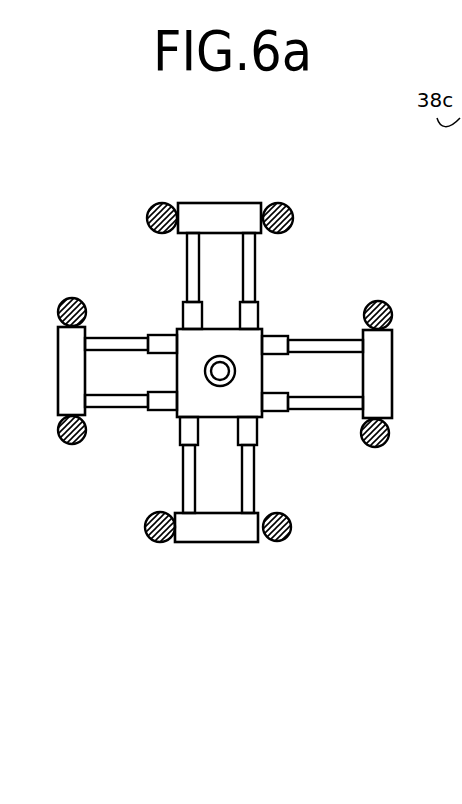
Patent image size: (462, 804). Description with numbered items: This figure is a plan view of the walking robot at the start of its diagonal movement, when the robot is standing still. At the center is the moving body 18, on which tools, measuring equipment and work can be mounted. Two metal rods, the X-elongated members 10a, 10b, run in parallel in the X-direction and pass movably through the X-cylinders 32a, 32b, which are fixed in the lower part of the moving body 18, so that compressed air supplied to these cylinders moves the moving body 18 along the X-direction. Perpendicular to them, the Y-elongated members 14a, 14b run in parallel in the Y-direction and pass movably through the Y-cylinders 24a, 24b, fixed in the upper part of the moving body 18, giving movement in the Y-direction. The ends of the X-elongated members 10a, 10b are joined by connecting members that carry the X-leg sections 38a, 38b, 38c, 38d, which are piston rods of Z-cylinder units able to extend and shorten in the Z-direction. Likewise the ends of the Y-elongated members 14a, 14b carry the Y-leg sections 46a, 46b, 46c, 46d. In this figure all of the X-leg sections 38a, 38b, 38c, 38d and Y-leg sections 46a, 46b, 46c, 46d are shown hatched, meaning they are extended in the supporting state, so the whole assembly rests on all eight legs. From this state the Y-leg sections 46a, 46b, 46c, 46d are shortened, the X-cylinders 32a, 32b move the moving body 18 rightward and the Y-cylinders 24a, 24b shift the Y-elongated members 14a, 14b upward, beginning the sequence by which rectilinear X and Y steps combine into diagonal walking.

The X-elongated member 10a is at (312, 338).
The X-elongated member 10b is at (325, 412).
The Y-elongated member 14a is at (240, 485).
The Y-elongated member 14b is at (183, 470).
The moving body 18 is at (195, 388).
The Y-cylinder 24a is at (240, 303).
The Y-cylinder 24b is at (177, 322).
The X-cylinder 32a is at (275, 413).
The X-cylinder 32b is at (278, 335).
The X-leg section 38a is at (378, 301).
The X-leg section 38b is at (385, 447).
The X-leg section 38c is at (72, 298).
The X-leg section 38d is at (62, 444).
The Y-leg section 46a is at (278, 204).
The Y-leg section 46b is at (158, 205).
The Y-leg section 46c is at (277, 541).
The Y-leg section 46d is at (152, 540).